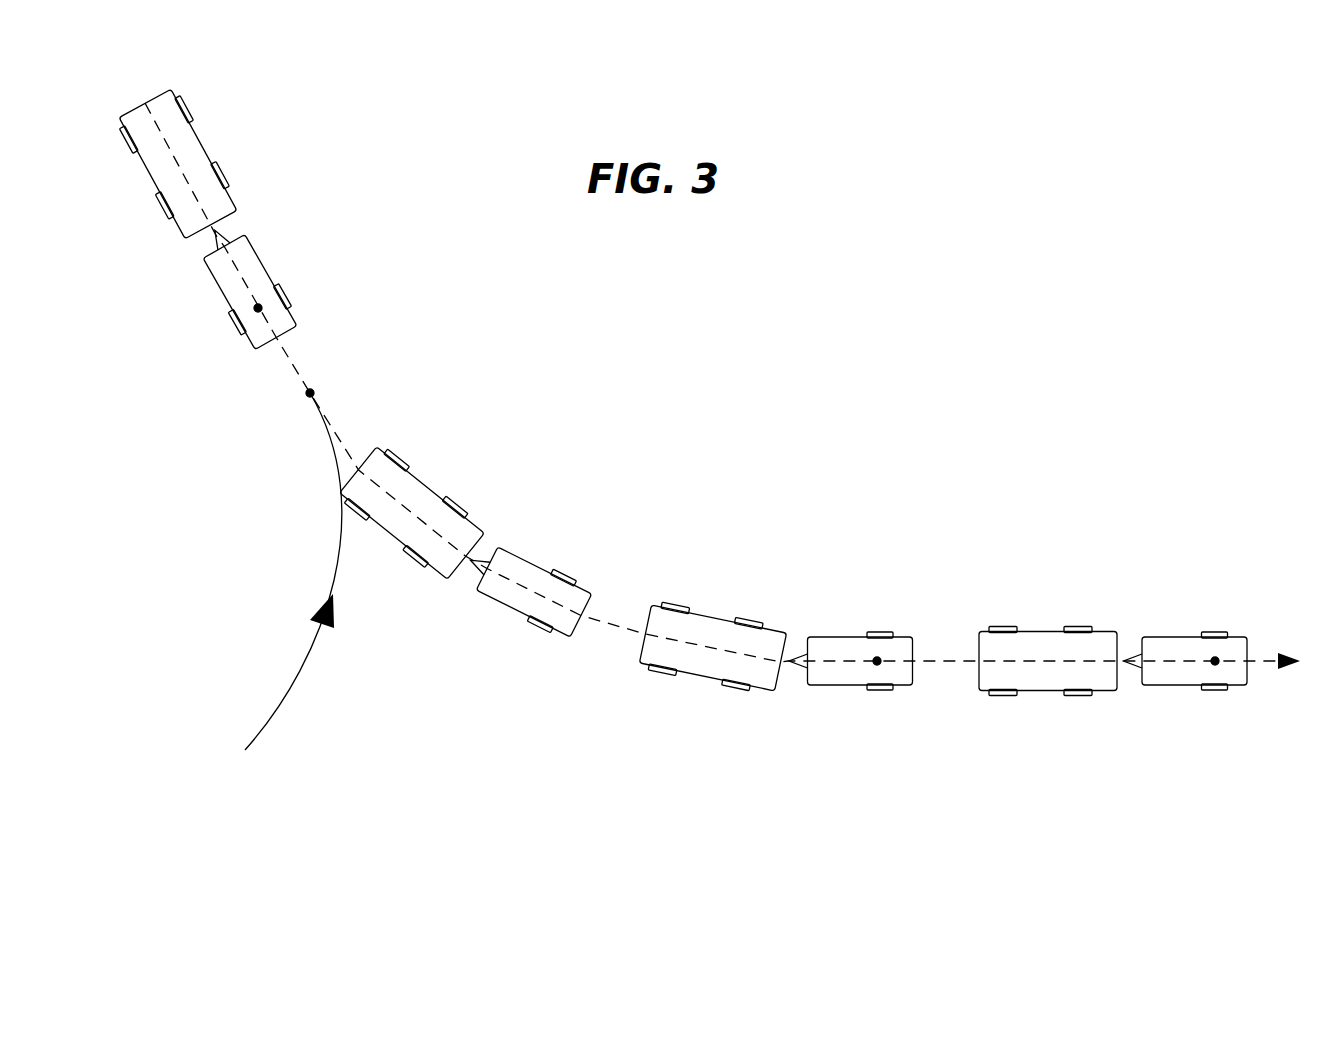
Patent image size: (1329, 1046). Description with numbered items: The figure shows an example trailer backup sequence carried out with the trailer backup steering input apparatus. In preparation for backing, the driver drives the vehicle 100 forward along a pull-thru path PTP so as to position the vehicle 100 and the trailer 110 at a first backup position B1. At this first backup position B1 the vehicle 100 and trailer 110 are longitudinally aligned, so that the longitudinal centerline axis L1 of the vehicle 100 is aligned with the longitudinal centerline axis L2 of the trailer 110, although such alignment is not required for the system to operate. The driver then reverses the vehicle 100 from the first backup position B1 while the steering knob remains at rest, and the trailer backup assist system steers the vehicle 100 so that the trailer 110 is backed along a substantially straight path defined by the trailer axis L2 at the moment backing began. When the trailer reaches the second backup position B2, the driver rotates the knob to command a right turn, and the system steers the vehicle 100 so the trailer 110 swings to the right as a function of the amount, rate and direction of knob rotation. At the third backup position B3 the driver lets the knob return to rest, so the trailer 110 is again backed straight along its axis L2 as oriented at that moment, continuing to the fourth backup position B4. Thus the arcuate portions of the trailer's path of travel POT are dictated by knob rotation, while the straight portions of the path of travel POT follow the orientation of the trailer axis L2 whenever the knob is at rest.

The vehicle 100 is at (182, 138).
The trailer 110 is at (247, 240).
The longitudinal centerline axis of the vehicle L1 is at (193, 202).
The longitudinal centerline axis of the trailer L2 is at (242, 282).
The first backup position B1 is at (258, 308).
The second backup position B2 is at (310, 393).
The third backup position B3 is at (877, 661).
The fourth backup position B4 is at (1215, 661).
The pull-thru path PTP is at (290, 688).
The path of travel POT is at (966, 661).